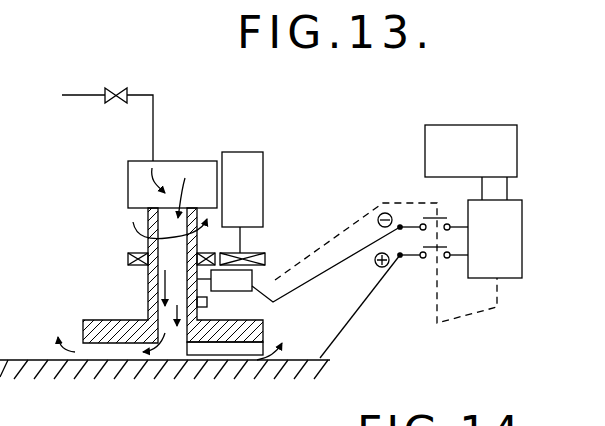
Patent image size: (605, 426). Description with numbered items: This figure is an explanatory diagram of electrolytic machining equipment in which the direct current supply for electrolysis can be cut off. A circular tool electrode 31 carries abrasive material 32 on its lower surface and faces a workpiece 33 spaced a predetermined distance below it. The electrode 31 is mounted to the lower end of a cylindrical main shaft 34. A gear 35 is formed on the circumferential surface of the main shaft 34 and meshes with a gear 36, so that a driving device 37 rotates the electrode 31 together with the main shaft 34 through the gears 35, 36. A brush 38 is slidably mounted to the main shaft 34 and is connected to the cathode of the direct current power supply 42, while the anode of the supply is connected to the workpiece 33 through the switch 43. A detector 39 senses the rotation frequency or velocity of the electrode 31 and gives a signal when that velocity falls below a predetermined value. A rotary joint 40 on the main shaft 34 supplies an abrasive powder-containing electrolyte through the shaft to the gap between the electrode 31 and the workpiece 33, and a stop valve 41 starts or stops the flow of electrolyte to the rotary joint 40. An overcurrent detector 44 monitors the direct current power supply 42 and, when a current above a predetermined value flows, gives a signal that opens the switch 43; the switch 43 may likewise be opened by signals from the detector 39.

The circular tool electrode 31 is at (108, 331).
The abrasive material 32 is at (247, 347).
The workpiece 33 is at (287, 366).
The cylindrical main shaft 34 is at (147, 287).
The gear 35 is at (128, 254).
The gear 36 is at (263, 252).
The driving device 37 is at (247, 172).
The brush 38 is at (202, 308).
The detector 39 is at (228, 284).
The rotary joint 40 is at (177, 170).
The stop valve 41 is at (116, 88).
The direct current power supply 42 is at (472, 143).
The switch 43 is at (432, 258).
The overcurrent detector 44 is at (503, 268).